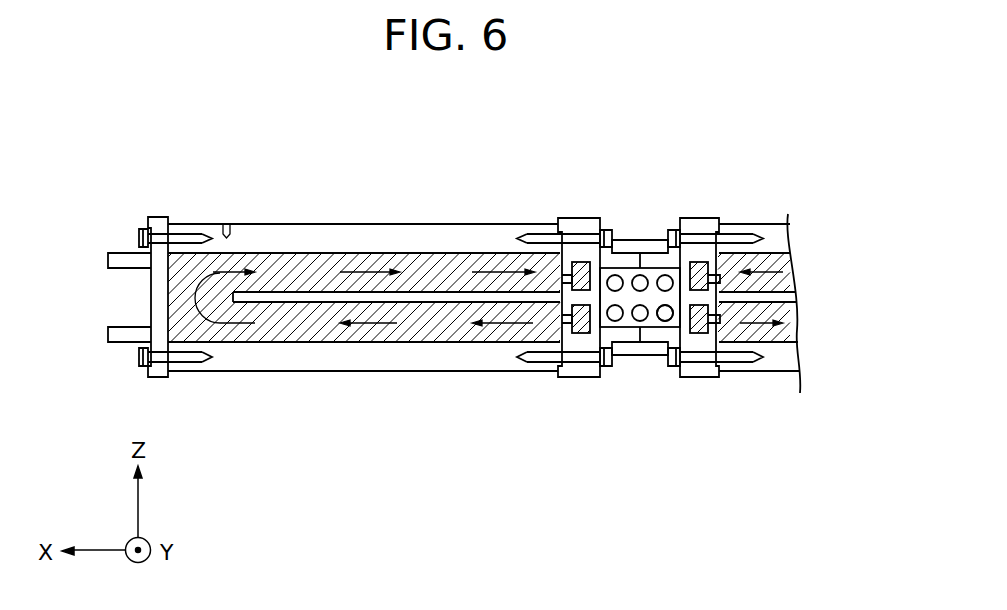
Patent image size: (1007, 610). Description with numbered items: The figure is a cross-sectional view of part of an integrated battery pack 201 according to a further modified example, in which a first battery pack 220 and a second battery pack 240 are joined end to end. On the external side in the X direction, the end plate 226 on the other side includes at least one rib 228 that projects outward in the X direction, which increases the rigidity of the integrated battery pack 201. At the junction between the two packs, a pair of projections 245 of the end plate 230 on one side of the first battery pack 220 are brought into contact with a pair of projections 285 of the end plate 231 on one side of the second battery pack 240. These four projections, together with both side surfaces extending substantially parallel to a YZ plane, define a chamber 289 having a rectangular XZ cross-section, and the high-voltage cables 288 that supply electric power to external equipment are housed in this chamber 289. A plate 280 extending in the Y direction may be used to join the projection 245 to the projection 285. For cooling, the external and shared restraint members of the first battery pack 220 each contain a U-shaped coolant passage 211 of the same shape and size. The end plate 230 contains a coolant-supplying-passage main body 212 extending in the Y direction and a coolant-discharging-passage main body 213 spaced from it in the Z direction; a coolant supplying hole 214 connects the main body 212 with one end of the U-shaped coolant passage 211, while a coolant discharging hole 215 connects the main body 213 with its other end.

The integrated battery pack 201 is at (434, 168).
The second battery pack 240 is at (348, 216).
The end plate on the other side 226 is at (160, 219).
The rib 228 is at (108, 256).
The end plate on one side of second battery pack 231 is at (578, 225).
The end plate on one side of first battery pack 230 is at (697, 221).
The plate 280 is at (637, 239).
The projections of end plate on one side of second battery pack 285 is at (627, 338).
The projections of end plate on one side of first battery pack 245 is at (653, 334).
The chamber 289 is at (612, 296).
The high-voltage cables 288 is at (668, 318).
The coolant-discharging-passage main body 213 is at (705, 276).
The coolant-supplying-passage main body 212 is at (703, 334).
The coolant discharging hole 215 is at (721, 272).
The coolant supplying hole 214 is at (722, 319).
The first battery pack 220 is at (761, 211).
The U-shaped coolant passage 211 is at (795, 333).